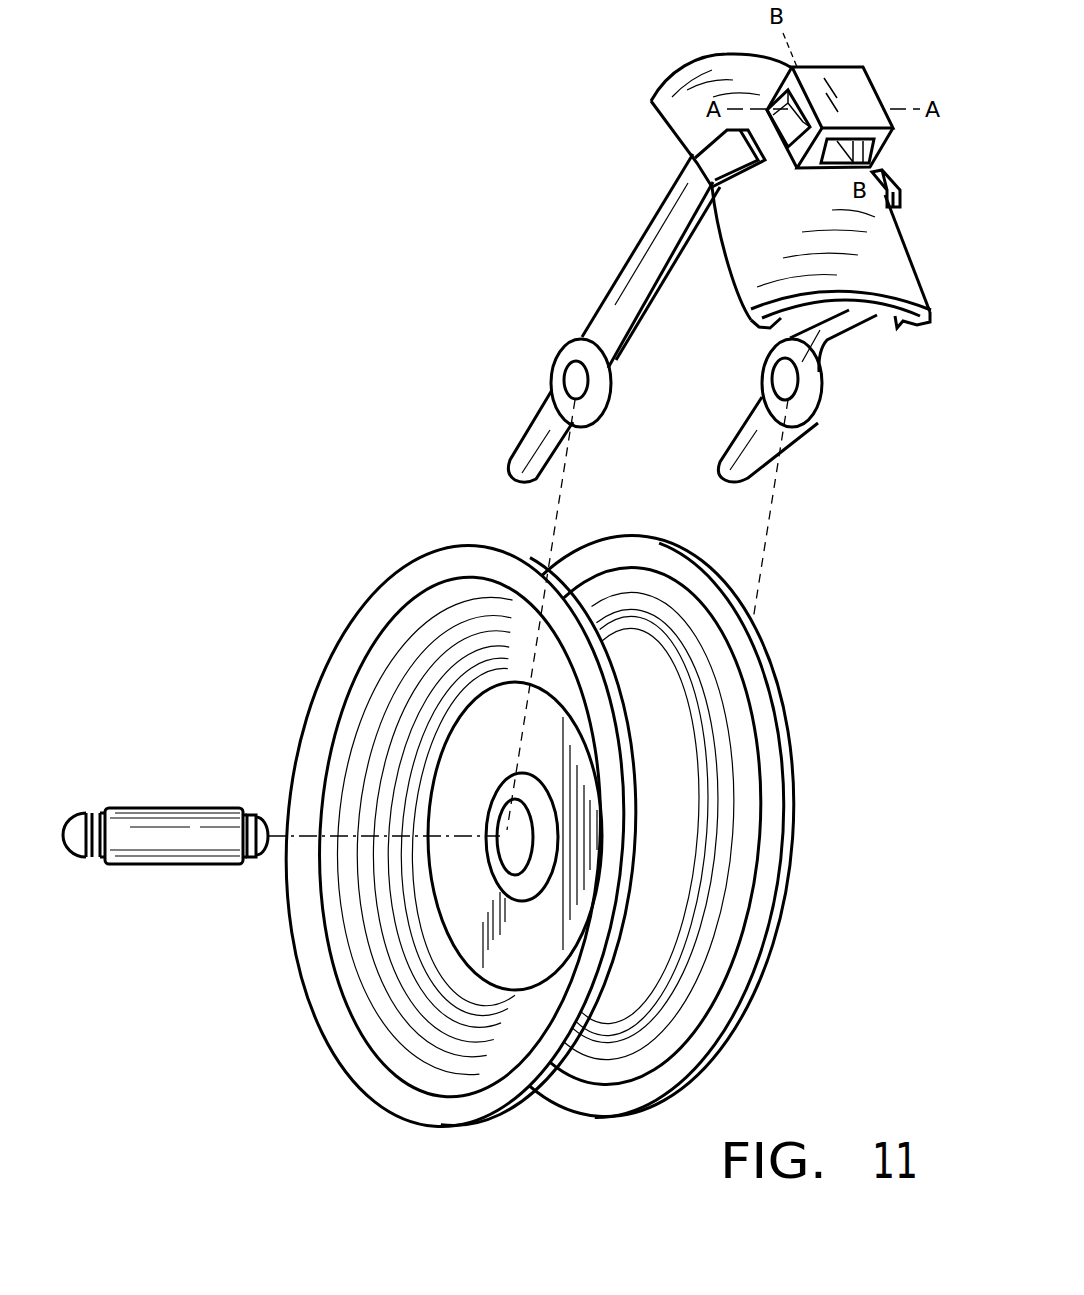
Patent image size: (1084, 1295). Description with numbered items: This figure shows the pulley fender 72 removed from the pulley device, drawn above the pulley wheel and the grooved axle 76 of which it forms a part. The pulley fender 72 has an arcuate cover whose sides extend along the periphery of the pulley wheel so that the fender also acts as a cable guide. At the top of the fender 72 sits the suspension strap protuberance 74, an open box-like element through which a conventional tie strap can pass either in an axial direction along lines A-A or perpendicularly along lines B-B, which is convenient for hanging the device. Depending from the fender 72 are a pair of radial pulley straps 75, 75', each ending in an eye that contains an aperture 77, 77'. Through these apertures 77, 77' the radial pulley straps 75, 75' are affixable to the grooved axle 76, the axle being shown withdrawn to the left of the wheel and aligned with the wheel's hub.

The pulley fender 72 is at (660, 52).
The suspension strap protuberance 74 is at (860, 80).
The radial pulley strap 75 is at (622, 261).
The radial pulley strap 75' is at (885, 347).
The grooved axle 76 is at (90, 808).
The aperture 77 is at (520, 406).
The aperture 77' is at (735, 408).